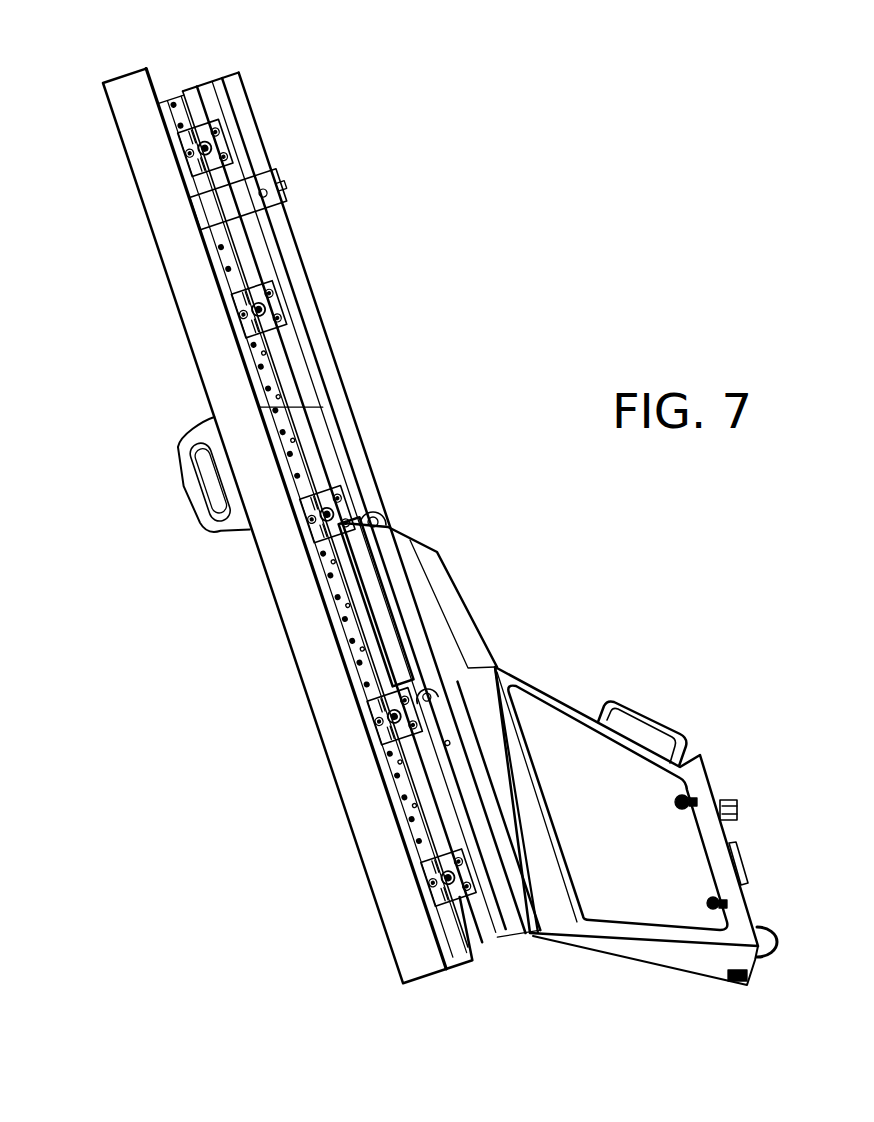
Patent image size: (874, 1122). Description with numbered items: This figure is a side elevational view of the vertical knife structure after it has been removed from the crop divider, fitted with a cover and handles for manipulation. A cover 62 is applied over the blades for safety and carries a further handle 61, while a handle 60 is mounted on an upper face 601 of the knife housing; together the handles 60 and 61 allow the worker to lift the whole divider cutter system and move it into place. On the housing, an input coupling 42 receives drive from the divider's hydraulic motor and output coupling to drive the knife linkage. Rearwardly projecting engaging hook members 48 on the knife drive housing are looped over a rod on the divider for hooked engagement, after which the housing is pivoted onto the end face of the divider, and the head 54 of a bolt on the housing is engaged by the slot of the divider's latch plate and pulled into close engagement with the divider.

The input coupling 42 is at (742, 858).
The engaging hook members 48 is at (765, 940).
The head of bolt 54 is at (730, 795).
The handle 60 is at (638, 707).
The upper face 601 is at (557, 693).
The further handle 61 is at (187, 503).
The cover 62 is at (291, 520).